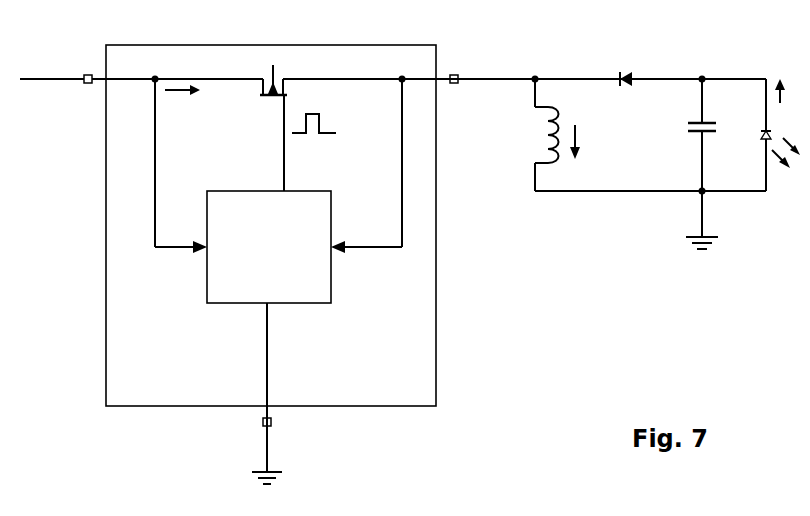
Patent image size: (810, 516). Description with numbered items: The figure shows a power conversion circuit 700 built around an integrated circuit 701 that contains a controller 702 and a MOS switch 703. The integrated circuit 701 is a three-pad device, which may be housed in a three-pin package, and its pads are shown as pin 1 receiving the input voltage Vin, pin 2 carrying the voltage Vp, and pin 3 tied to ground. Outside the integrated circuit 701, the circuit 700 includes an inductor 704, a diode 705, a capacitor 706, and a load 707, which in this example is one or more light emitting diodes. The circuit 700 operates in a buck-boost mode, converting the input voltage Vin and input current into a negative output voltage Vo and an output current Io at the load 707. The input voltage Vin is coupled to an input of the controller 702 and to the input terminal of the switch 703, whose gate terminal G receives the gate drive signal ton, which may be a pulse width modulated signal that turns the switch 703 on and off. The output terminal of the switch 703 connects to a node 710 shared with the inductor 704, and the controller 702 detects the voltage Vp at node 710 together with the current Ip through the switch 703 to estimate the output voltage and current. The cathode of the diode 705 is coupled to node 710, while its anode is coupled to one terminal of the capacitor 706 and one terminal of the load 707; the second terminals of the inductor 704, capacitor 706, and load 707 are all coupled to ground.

The power conversion circuit 700 is at (646, 325).
The integrated circuit 701 is at (436, 332).
The controller 702 is at (316, 303).
The MOS switch 703 is at (266, 96).
The inductor 704 is at (548, 150).
The diode 705 is at (625, 70).
The capacitor 706 is at (686, 125).
The load 707 is at (764, 134).
The node 710 is at (402, 79).
The input pin Vin 1 is at (89, 93).
The output pin Vp 2 is at (456, 93).
The ground pin 3 is at (279, 423).